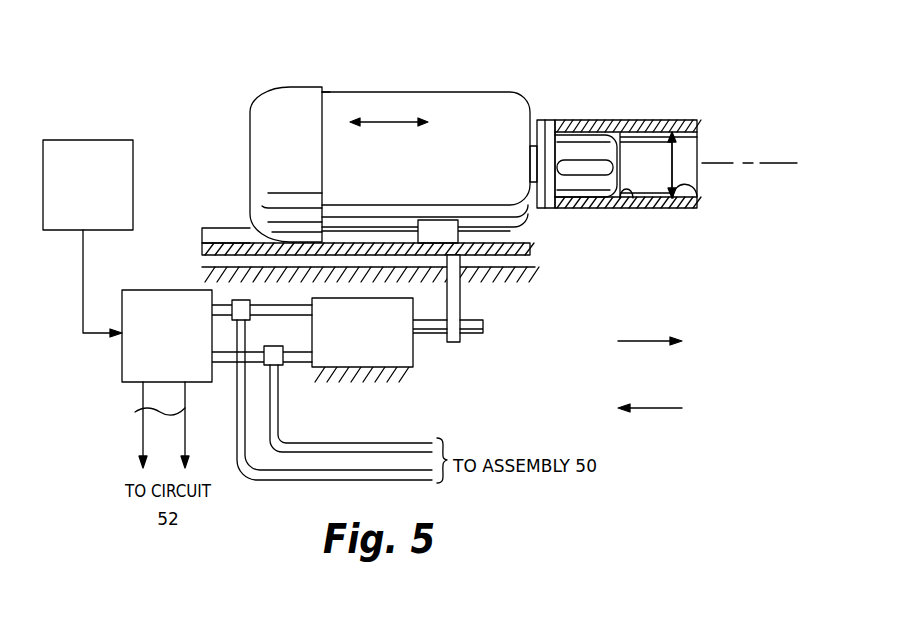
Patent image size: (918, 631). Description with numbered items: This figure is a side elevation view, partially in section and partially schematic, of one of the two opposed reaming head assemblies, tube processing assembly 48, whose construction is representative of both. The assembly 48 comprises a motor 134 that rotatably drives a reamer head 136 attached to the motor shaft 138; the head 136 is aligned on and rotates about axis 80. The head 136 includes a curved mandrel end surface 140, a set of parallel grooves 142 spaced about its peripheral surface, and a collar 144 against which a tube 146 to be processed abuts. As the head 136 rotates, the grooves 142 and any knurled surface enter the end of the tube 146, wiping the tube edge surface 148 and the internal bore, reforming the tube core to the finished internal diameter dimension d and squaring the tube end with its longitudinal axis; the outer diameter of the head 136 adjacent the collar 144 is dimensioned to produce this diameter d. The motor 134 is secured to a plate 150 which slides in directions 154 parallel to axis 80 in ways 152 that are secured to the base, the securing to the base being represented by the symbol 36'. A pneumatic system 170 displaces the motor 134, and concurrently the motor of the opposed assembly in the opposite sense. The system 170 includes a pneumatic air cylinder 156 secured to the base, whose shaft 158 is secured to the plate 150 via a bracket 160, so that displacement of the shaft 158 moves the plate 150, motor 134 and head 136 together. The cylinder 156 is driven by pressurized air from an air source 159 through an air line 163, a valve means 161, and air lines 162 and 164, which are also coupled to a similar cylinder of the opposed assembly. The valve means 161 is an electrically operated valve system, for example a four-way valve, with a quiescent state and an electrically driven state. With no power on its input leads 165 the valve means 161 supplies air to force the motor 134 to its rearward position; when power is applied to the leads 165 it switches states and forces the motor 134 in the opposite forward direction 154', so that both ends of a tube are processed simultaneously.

The pneumatic system 170 is at (170, 95).
The tube processing assembly 48 is at (382, 72).
The motor 134 is at (482, 92).
The tube edge surface 148 is at (549, 120).
The tube 146 is at (626, 120).
The axis 80 is at (773, 162).
The motor shaft 138 is at (530, 165).
The reamer head 136 is at (619, 176).
The directions 154 is at (389, 141).
The forward direction 154' is at (650, 321).
The plate 150 is at (214, 232).
The ways 152 is at (366, 236).
The parallel grooves 142 is at (590, 198).
The curved mandrel end surface 140 is at (632, 198).
The collar 144 is at (556, 252).
The base symbol 36' is at (370, 342).
The air source 159 is at (133, 166).
The air line 163 is at (85, 268).
The valve means 161 is at (120, 358).
The air line 164 is at (300, 308).
The air line 162 is at (302, 362).
The pneumatic air cylinder 156 is at (413, 356).
The cylinder shaft 158 is at (483, 327).
The bracket 160 is at (455, 343).
The input leads 165 is at (135, 423).
The internal diameter dimension d is at (697, 185).